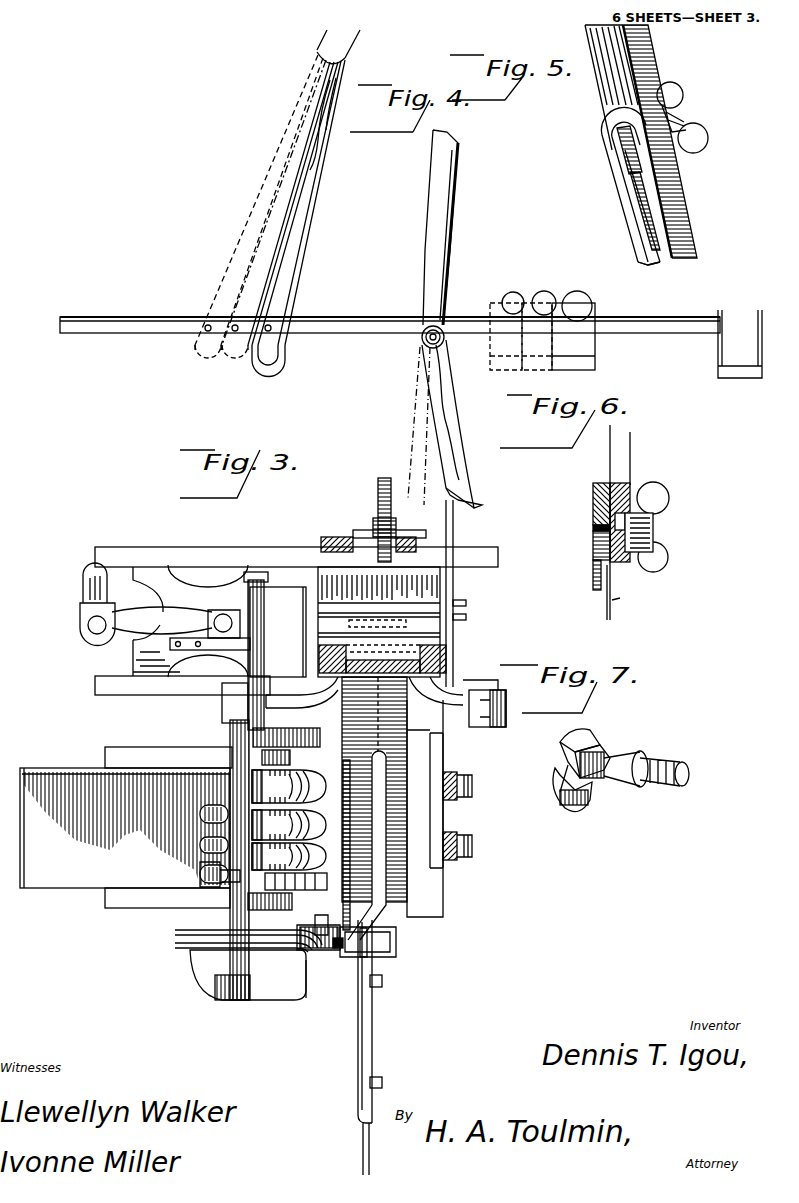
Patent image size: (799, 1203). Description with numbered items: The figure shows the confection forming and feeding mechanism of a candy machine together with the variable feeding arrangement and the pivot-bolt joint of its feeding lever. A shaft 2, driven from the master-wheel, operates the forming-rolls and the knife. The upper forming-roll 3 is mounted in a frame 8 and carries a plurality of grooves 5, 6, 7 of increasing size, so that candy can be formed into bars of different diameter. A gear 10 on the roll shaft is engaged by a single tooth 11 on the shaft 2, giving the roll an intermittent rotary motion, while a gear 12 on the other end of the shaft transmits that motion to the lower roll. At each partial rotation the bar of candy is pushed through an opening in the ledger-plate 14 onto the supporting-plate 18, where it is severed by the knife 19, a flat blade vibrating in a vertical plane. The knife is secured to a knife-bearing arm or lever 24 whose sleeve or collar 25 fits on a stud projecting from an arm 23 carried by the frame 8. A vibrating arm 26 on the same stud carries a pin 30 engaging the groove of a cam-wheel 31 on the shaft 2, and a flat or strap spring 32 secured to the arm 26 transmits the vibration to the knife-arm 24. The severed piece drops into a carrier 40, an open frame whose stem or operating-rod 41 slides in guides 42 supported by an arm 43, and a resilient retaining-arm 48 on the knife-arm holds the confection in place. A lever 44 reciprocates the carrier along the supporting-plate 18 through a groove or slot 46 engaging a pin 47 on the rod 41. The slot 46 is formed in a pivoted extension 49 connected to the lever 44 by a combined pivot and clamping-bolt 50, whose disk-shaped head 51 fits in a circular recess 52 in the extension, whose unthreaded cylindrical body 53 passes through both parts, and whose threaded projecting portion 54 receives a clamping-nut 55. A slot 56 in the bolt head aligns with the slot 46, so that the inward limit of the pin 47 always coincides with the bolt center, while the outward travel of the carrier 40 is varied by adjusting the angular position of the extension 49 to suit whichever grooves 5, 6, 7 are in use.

In FIG. 3, the shaft 2 is at (230, 735).
In FIG. 3, the upper forming-roll 3 is at (232, 762).
In FIG. 3, the groove 5 is at (250, 857).
In FIG. 3, the groove 6 is at (250, 826).
In FIG. 3, the groove 7 is at (250, 790).
In FIG. 3, the frame 8 is at (128, 905).
In FIG. 3, the gear 10 is at (395, 918).
In FIG. 3, the single tooth 11 is at (232, 880).
In FIG. 3, the gear 12 is at (286, 730).
In FIG. 3, the ledger-plate 14 is at (340, 903).
In FIG. 3, the supporting-plate 18 is at (420, 895).
In FIG. 3, the knife 19 is at (375, 765).
In FIG. 3, the arm 23 is at (280, 990).
In FIG. 3, the knife-bearing arm or lever 24 is at (372, 930).
In FIG. 3, the sleeve or collar 25 is at (350, 957).
In FIG. 3, the vibrating arm 26 is at (307, 995).
In FIG. 3, the pin 30 is at (300, 940).
In FIG. 3, the cam-wheel 31 is at (178, 945).
In FIG. 3, the flat or strap spring 32 is at (338, 950).
In FIG. 4, the carrier 40 is at (718, 350).
In FIG. 3, the carrier 40 is at (435, 860).
In FIG. 4, the stem or operating-rod 41 is at (368, 312).
In FIG. 3, the guides 42 is at (382, 980).
In FIG. 3, the arm 43 is at (358, 1035).
In FIG. 4, the lever 44 is at (449, 280).
In FIG. 5, the lever 44 is at (652, 72).
In FIG. 6, the lever 44 is at (628, 452).
In FIG. 4, the groove or slot 46 is at (462, 480).
In FIG. 5, the groove or slot 46 is at (662, 250).
In FIG. 6, the groove or slot 46 is at (612, 612).
In FIG. 3, the pin 47 is at (373, 1045).
In FIG. 3, the flat spring or resilient retaining-arm 48 is at (443, 812).
In FIG. 4, the pivoted extension 49 is at (462, 414).
In FIG. 5, the pivoted extension 49 is at (604, 120).
In FIG. 6, the pivoted extension 49 is at (596, 484).
In FIG. 4, the combined pivot and clamping-bolt 50 is at (441, 330).
In FIG. 6, the combined pivot and clamping-bolt 50 is at (593, 512).
In FIG. 7, the combined pivot and clamping-bolt 50 is at (600, 748).
In FIG. 3, the combined pivot and clamping-bolt 50 is at (370, 1082).
In FIG. 7, the disk-shaped head 51 is at (590, 732).
In FIG. 5, the circular recess 52 is at (632, 150).
In FIG. 6, the circular recess 52 is at (596, 565).
In FIG. 7, the unthreaded cylindrical body 53 is at (628, 758).
In FIG. 7, the threaded projecting portion 54 is at (652, 762).
In FIG. 5, the clamping-nut 55 is at (683, 108).
In FIG. 6, the clamping-nut 55 is at (665, 490).
In FIG. 5, the slot 56 is at (620, 142).
In FIG. 6, the slot 56 is at (596, 545).
In FIG. 7, the slot 56 is at (555, 765).